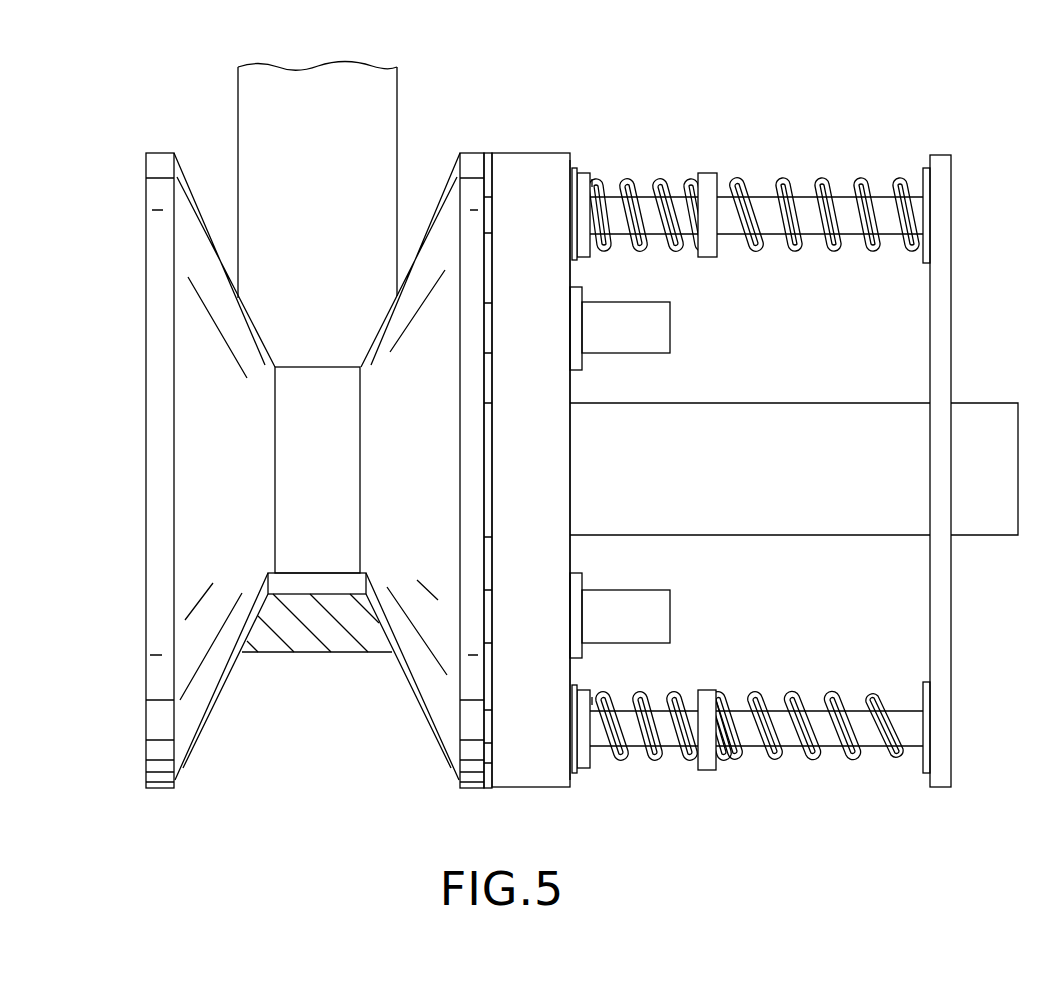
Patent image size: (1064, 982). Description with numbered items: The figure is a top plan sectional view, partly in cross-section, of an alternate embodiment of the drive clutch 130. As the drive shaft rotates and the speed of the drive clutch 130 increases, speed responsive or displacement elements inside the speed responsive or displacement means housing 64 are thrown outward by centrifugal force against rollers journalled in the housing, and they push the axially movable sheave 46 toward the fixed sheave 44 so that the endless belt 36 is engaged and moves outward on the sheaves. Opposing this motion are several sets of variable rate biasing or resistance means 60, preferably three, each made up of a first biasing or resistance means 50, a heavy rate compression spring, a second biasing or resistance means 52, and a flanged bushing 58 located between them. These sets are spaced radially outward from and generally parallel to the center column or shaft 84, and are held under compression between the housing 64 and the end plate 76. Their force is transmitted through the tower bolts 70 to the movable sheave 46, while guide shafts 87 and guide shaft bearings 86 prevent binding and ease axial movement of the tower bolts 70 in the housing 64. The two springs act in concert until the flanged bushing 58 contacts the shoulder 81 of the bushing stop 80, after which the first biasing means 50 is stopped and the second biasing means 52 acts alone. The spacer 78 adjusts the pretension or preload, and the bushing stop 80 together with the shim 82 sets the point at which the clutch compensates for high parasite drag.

The endless belt 36 is at (304, 68).
The fixed sheave 44 is at (193, 742).
The movable sheave 46 is at (446, 755).
The first biasing or resistance means 50 is at (664, 187).
The second biasing or resistance means 52 is at (822, 180).
The flanged bushing 58 is at (714, 173).
The variable rate biasing or resistance means 60 is at (731, 464).
The speed responsive or displacement means housing 64 is at (570, 390).
The tower bolts 70 is at (815, 237).
The end plate 76 is at (956, 322).
The spacer 78 is at (926, 165).
The bushing stop 80 is at (583, 172).
The shoulder 81 is at (595, 173).
The shim 82 is at (573, 167).
The center column or shaft 84 is at (847, 402).
The guide shaft bearings 86 is at (584, 289).
The guide shafts 87 is at (671, 325).
The drive clutch 130 is at (537, 93).